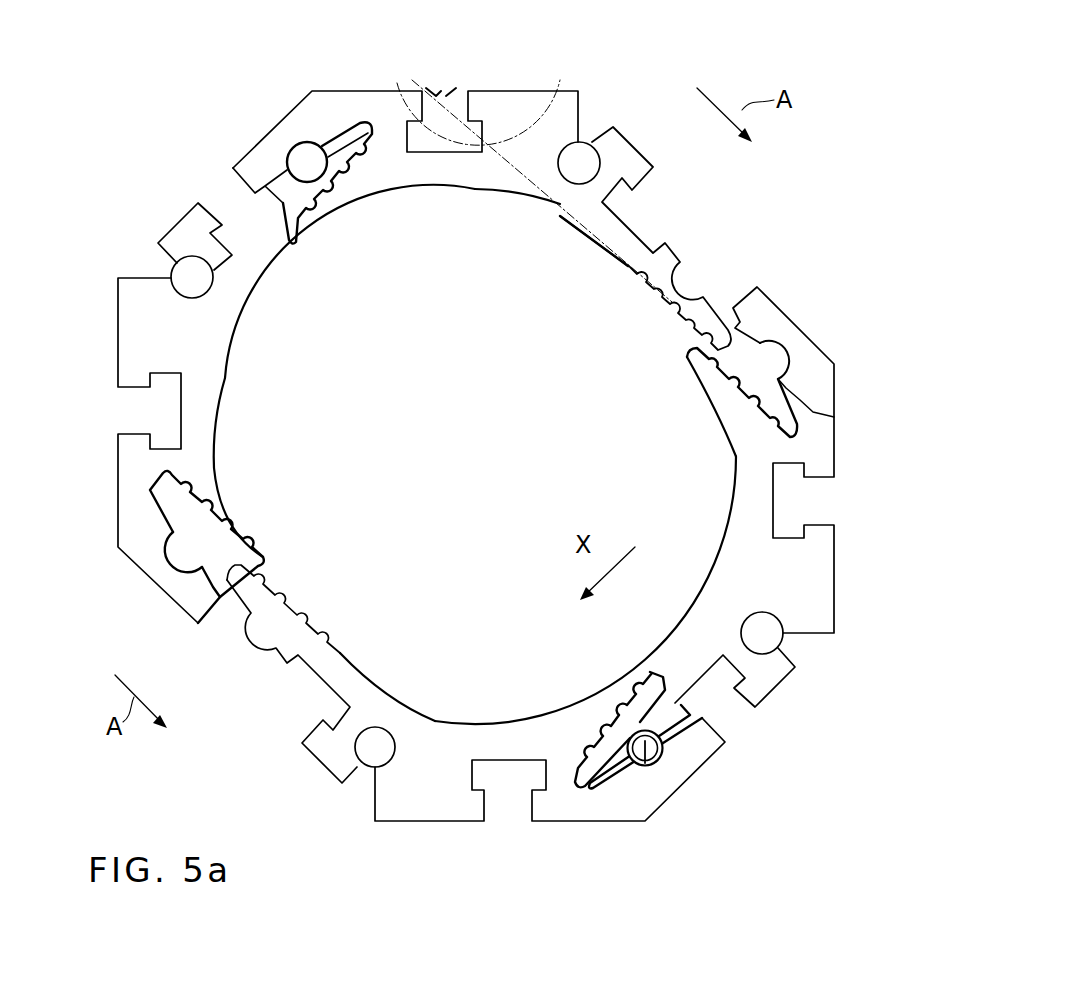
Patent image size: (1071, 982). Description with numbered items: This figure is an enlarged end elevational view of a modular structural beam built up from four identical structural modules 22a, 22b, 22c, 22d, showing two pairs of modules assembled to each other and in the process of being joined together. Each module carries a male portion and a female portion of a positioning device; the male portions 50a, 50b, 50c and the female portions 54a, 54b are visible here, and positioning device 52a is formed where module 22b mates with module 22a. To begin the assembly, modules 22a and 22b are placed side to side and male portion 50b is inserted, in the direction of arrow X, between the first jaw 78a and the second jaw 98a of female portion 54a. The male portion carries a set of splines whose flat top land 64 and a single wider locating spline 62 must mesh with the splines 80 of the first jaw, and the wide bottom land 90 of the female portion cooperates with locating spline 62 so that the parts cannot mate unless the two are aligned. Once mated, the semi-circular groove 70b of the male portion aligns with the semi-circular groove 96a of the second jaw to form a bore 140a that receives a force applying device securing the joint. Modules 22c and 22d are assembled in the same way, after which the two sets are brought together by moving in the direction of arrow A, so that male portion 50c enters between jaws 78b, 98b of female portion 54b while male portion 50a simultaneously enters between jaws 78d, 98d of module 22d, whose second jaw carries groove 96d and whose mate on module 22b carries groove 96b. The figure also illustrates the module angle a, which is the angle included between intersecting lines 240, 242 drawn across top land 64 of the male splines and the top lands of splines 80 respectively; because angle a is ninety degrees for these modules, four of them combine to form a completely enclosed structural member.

The structural module 22a is at (542, 828).
The structural module 22b is at (852, 528).
The structural module 22c is at (542, 87).
The structural module 22d is at (110, 501).
The male portion 50a is at (282, 615).
The male portion 50b is at (692, 718).
The male portion 50c is at (627, 243).
The positioning device 52a is at (618, 790).
The female portion 54a is at (692, 745).
The female portion 54b is at (770, 328).
The locating spline 62 is at (595, 787).
The top land 64 is at (668, 305).
The semi-circular groove 70b is at (664, 700).
The first jaw 78a is at (623, 712).
The first jaw 78b is at (710, 380).
The first jaw 78d is at (232, 514).
The splines 80 is at (345, 180).
The wide bottom land 90 is at (622, 718).
The semi-circular groove 96a is at (660, 766).
The semi-circular groove 96b is at (787, 378).
The semi-circular groove 96d is at (183, 552).
The second jaw 98a is at (697, 745).
The second jaw 98b is at (750, 300).
The second jaw 98d is at (180, 591).
The bore 140a is at (664, 768).
The line 240 is at (562, 82).
The line 242 is at (410, 80).
The module angle a is at (444, 96).